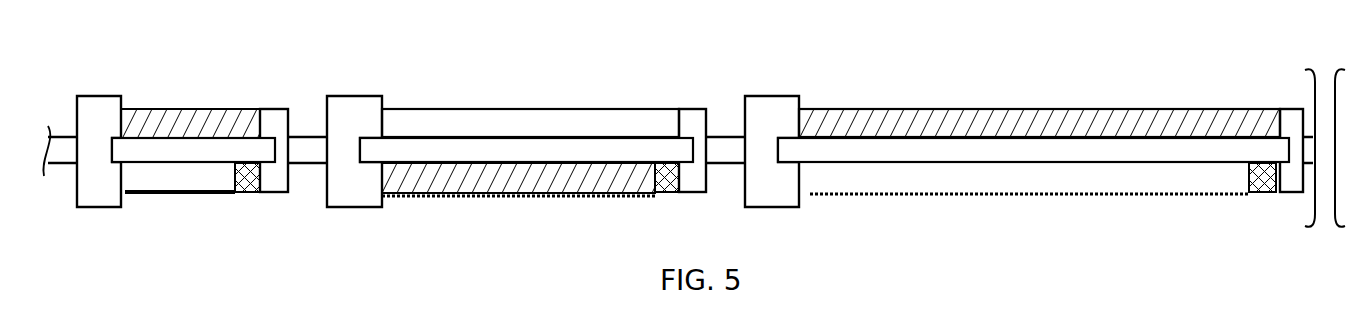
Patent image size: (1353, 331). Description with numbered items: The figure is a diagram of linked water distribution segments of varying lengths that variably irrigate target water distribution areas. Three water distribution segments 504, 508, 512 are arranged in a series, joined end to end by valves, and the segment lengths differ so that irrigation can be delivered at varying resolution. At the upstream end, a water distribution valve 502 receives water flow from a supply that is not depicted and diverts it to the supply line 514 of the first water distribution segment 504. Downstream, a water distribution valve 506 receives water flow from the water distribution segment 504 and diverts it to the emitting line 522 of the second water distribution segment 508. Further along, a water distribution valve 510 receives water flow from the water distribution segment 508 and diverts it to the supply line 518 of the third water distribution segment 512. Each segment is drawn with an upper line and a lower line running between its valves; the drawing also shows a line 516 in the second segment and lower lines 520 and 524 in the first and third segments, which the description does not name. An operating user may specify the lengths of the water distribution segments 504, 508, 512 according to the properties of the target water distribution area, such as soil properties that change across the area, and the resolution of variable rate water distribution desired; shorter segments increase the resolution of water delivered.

The water distribution valve 502 is at (103, 96).
The water distribution segment 504 is at (216, 124).
The water distribution valve 506 is at (354, 96).
The water distribution segment 508 is at (536, 123).
The water distribution valve 510 is at (773, 96).
The water distribution segment 512 is at (1040, 123).
The supply line 514 is at (238, 109).
The insulating layer 516 is at (482, 109).
The supply line 518 is at (900, 109).
The sensor strip 520 is at (222, 194).
The emitting line 522 is at (488, 197).
The sensor strip 524 is at (913, 196).